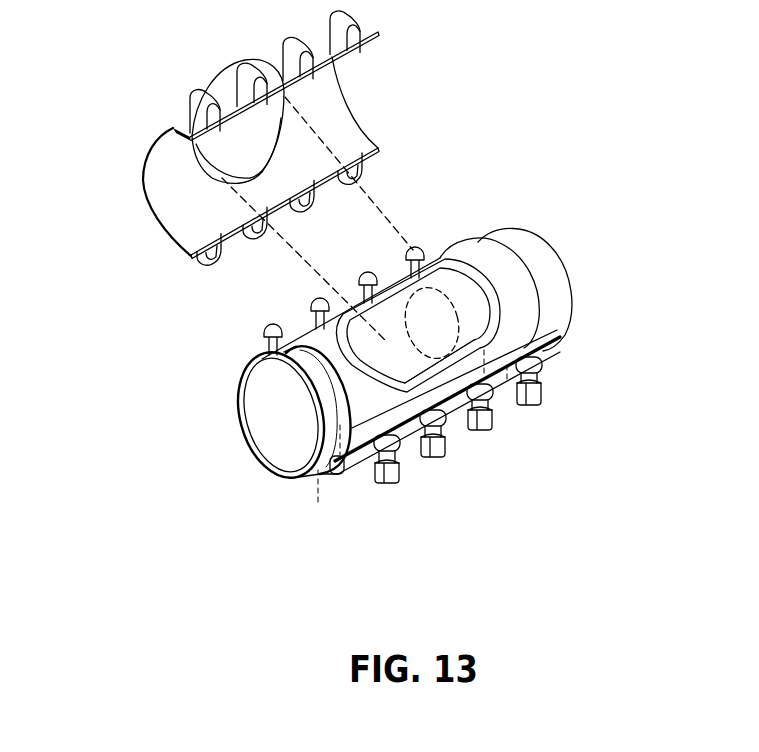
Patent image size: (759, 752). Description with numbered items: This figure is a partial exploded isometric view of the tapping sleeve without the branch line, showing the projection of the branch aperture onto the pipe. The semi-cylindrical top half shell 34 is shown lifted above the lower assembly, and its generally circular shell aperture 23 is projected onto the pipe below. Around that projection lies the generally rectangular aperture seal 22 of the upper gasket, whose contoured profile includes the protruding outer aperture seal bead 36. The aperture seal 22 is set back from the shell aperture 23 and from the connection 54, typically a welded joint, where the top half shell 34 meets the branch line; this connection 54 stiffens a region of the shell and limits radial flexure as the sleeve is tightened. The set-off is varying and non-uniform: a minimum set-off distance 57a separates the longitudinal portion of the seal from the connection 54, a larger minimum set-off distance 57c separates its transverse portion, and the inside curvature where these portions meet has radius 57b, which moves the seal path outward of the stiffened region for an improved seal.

The aperture seal 22 is at (488, 379).
The shell aperture 23 is at (213, 184).
The top half shell 34 is at (299, 140).
The outer aperture seal bead 36 is at (492, 288).
The connection 54 is at (372, 344).
The minimum set-off distance 57a is at (412, 350).
The set-off radius 57b is at (428, 319).
The minimum set-off distance 57c is at (437, 302).